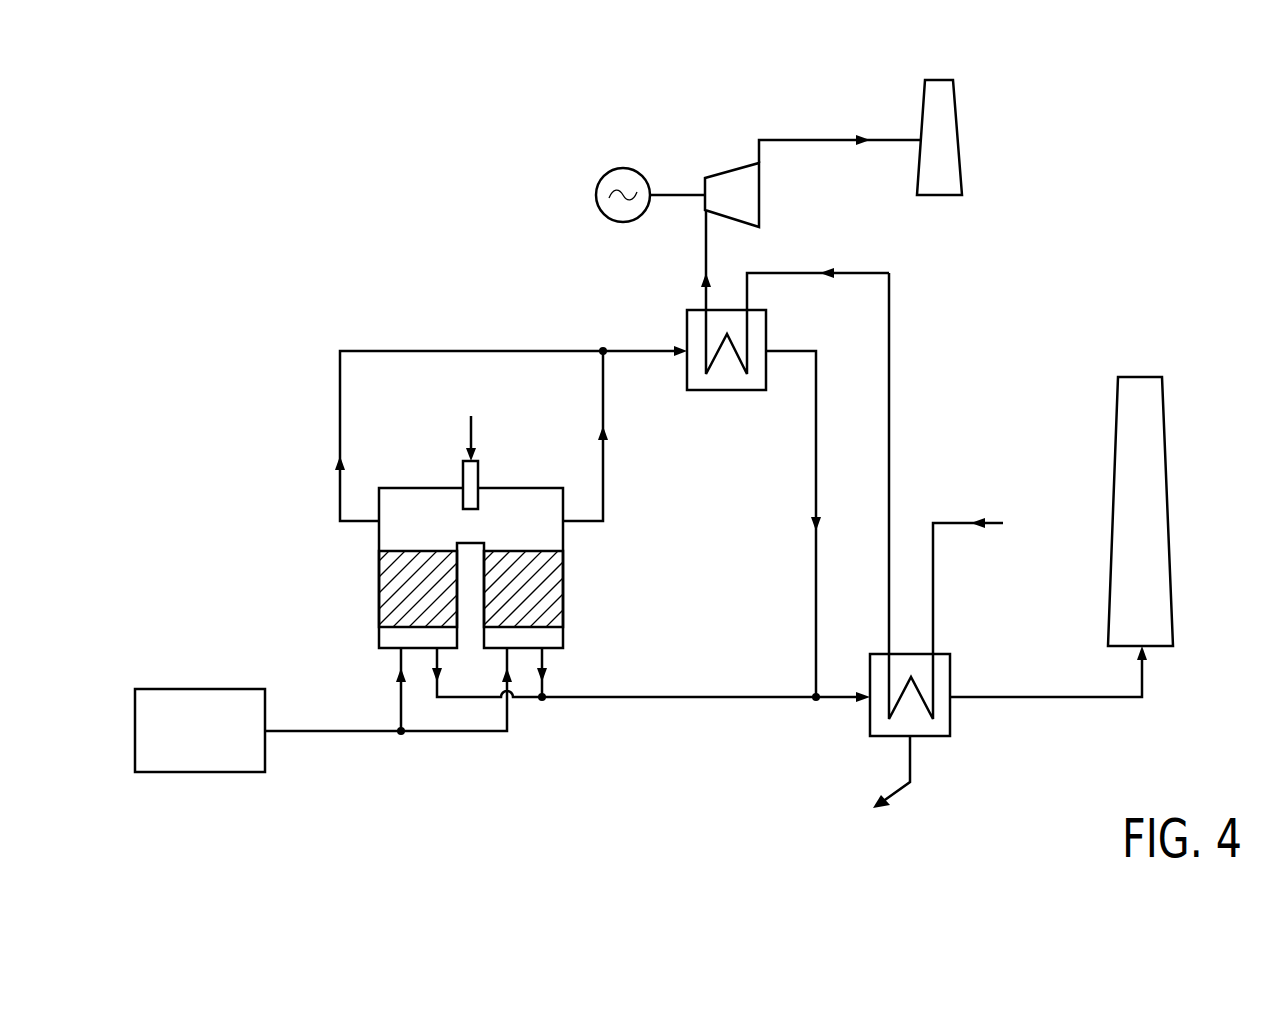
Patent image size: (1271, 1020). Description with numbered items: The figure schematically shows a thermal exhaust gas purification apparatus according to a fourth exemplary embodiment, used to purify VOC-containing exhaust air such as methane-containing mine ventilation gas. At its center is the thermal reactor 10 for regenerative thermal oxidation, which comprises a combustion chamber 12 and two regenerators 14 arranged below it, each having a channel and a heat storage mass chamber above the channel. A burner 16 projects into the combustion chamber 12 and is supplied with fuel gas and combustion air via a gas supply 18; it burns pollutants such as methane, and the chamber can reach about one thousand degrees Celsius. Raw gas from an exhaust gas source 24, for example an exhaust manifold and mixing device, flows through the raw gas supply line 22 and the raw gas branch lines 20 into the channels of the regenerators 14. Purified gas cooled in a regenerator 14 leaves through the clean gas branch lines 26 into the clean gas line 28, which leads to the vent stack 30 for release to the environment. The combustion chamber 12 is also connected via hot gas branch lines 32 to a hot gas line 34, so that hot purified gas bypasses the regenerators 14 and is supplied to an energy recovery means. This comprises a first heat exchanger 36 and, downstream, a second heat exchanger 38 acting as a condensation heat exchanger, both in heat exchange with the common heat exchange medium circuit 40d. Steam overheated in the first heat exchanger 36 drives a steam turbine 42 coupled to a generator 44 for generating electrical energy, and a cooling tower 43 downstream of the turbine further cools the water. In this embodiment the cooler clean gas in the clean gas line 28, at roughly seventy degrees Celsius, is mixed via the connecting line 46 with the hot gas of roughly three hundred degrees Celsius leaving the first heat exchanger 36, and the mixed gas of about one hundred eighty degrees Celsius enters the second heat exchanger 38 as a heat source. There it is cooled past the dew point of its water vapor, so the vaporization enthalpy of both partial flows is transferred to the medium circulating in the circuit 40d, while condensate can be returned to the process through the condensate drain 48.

The thermal reactor 10 is at (482, 525).
The combustion chamber 12 is at (406, 490).
The regenerators 14 is at (390, 586).
The burner 16 is at (478, 481).
The gas supply 18 is at (472, 434).
The raw gas branch line 20 is at (400, 690).
The raw gas supply line 22 is at (335, 733).
The exhaust gas source 24 is at (198, 690).
The clean gas branch line 26 is at (441, 690).
The clean gas line 28 is at (752, 699).
The vent stack 30 is at (1116, 527).
The hot gas branch lines 32 is at (340, 398).
The hot gas line 34 is at (630, 349).
The first heat exchanger 36 is at (724, 391).
The second heat exchanger 38 is at (952, 682).
The heat exchange medium circuit 40d is at (856, 229).
The steam turbine 42 is at (712, 178).
The cooling tower 43 is at (961, 147).
The generator 44 is at (612, 172).
The connecting line 46 is at (815, 554).
The condensate drain 48 is at (893, 795).